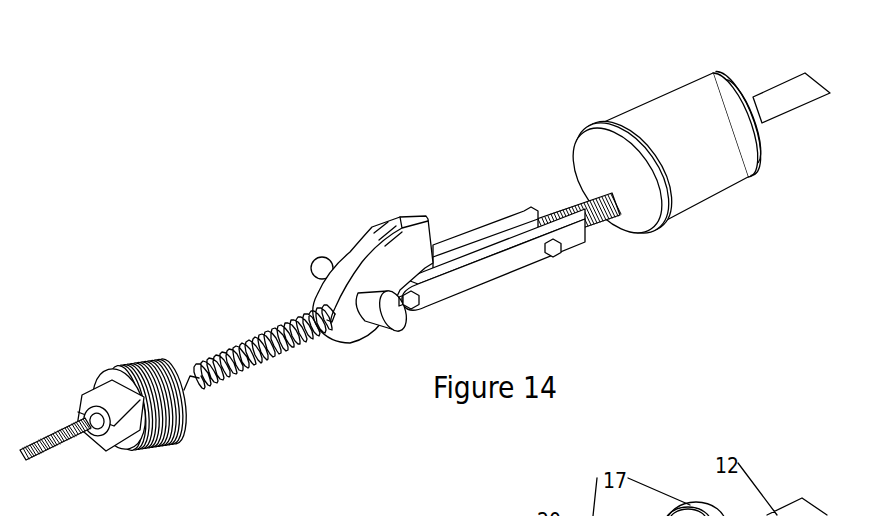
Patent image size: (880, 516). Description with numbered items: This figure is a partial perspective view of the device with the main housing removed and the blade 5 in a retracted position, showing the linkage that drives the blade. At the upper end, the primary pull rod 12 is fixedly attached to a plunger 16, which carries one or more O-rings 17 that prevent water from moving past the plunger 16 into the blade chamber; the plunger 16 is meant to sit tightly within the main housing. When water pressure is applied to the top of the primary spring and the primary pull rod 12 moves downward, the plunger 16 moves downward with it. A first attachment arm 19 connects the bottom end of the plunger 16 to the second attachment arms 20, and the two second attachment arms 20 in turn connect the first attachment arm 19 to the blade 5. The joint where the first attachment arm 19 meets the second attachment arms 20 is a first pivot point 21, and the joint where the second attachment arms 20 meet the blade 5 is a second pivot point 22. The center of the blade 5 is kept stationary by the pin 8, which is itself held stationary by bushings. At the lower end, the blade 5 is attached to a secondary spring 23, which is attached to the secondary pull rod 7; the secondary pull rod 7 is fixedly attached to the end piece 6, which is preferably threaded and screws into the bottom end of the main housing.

The blade 5 is at (400, 247).
The end piece 6 is at (118, 403).
The secondary pull rod 7 is at (55, 447).
The pin 8 is at (313, 270).
The primary pull rod 12 is at (787, 92).
The plunger 16 is at (686, 151).
The O-rings 17 is at (688, 84).
The first attachment arm 19 is at (597, 225).
The second attachment arm 20 is at (478, 242).
The first pivot point 21 is at (560, 255).
The second pivot point 22 is at (422, 303).
The secondary spring 23 is at (278, 348).